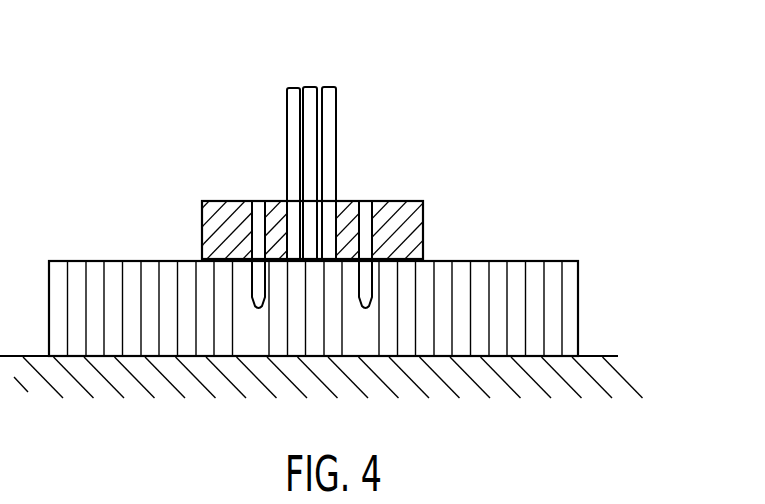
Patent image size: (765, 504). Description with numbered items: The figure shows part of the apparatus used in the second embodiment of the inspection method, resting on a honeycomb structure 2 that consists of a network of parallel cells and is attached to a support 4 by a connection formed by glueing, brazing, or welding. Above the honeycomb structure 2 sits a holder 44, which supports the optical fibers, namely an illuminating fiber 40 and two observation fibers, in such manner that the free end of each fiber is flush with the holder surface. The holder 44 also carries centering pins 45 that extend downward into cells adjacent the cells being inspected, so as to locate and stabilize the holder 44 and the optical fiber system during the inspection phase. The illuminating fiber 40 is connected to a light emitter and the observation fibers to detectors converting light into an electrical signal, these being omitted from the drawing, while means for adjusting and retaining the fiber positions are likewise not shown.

The honeycomb structure 2 is at (578, 298).
The support 4 is at (592, 381).
The illuminating fiber 40 is at (312, 140).
The holder 44 is at (423, 223).
The centering pins 45 is at (252, 270).